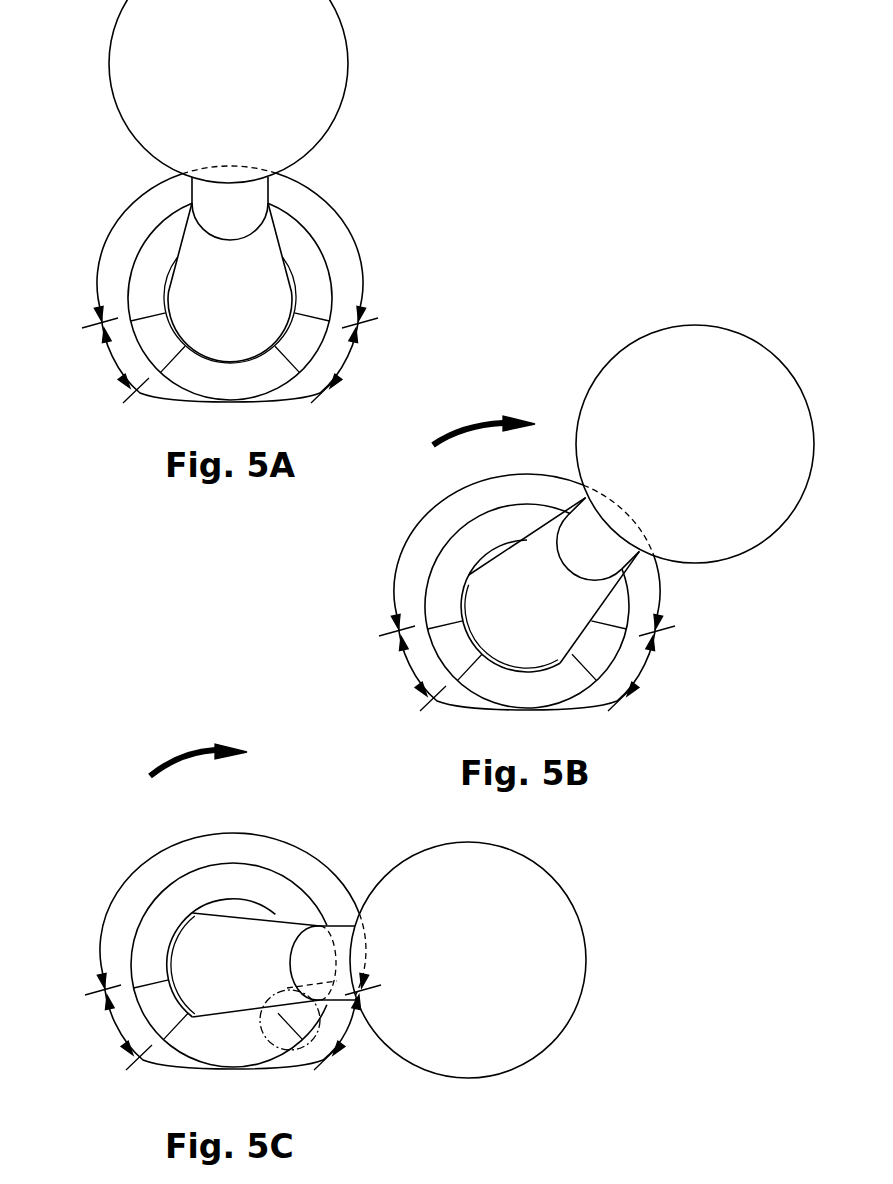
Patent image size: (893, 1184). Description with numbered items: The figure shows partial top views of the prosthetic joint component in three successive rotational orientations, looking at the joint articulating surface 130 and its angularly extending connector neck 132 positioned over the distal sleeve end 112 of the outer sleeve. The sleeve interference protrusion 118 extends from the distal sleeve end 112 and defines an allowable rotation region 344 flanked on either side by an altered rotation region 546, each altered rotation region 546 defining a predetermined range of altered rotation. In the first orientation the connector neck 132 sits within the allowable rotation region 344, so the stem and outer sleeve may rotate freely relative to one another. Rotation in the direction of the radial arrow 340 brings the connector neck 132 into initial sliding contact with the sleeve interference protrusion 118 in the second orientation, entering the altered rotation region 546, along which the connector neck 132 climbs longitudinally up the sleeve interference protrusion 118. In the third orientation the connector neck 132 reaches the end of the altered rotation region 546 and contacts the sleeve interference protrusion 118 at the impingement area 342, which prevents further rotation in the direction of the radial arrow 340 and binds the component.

In FIG. 5A, the joint articulating surface 130 is at (208, 77).
In FIG. 5B, the joint articulating surface 130 is at (674, 457).
In FIG. 5C, the joint articulating surface 130 is at (443, 958).
In FIG. 5A, the connector neck 132 is at (178, 203).
In FIG. 5B, the connector neck 132 is at (563, 502).
In FIG. 5C, the connector neck 132 is at (332, 907).
In FIG. 5A, the distal sleeve end 112 is at (129, 270).
In FIG. 5B, the distal sleeve end 112 is at (450, 530).
In FIG. 5C, the distal sleeve end 112 is at (255, 858).
In FIG. 5A, the allowable rotation region 344 is at (350, 238).
In FIG. 5B, the allowable rotation region 344 is at (660, 591).
In FIG. 5C, the allowable rotation region 344 is at (160, 852).
In FIG. 5A, the sleeve interference protrusion 118 is at (225, 378).
In FIG. 5B, the sleeve interference protrusion 118 is at (528, 695).
In FIG. 5C, the sleeve interference protrusion 118 is at (228, 1045).
In FIG. 5A, the altered rotation region 546 is at (112, 363).
In FIG. 5B, the altered rotation region 546 is at (407, 667).
In FIG. 5C, the altered rotation region 546 is at (115, 1030).
In FIG. 5B, the radial arrow 340 is at (470, 420).
In FIG. 5C, the radial arrow 340 is at (183, 748).
In FIG. 5C, the impingement area 342 is at (292, 1050).